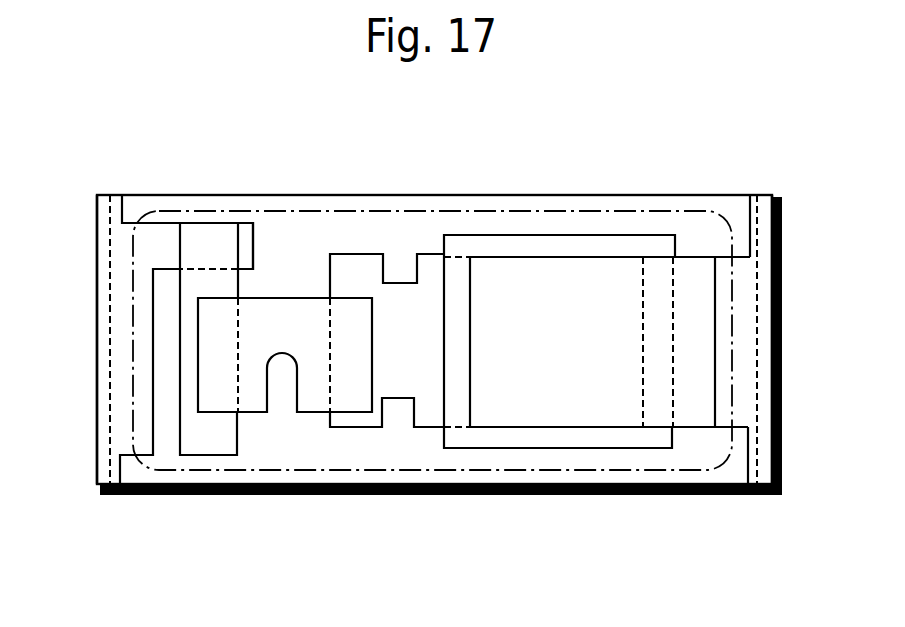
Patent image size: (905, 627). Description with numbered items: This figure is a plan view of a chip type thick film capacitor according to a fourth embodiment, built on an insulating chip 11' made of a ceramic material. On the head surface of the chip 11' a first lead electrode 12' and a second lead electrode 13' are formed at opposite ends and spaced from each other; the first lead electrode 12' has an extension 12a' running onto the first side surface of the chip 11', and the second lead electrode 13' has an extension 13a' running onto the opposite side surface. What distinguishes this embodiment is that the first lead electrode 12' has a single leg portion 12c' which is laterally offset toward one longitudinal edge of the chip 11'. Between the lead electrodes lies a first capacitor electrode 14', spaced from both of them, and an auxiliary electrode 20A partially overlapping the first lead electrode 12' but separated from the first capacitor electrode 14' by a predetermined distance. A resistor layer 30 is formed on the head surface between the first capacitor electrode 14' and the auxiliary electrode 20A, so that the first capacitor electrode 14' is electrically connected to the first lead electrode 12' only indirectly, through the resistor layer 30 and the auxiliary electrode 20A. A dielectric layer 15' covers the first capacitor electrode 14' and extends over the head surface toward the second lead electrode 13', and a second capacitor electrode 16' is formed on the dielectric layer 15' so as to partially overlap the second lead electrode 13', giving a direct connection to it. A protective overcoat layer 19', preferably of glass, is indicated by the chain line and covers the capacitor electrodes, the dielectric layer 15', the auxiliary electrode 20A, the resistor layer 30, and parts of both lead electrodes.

The insulating chip 11' is at (439, 305).
The first lead electrode 12' is at (135, 339).
The extension of the first lead electrode 12a' is at (53, 339).
The single leg portion 12c' is at (201, 193).
The second lead electrode 13' is at (796, 339).
The extension of the second lead electrode 13a' is at (821, 339).
The first capacitor electrode 14' is at (387, 416).
The dielectric layer 15' is at (579, 284).
The second capacitor electrode 16' is at (597, 273).
The protective overcoat layer 19' is at (432, 394).
The auxiliary electrode 20A is at (205, 435).
The resistor layer 30 is at (287, 313).